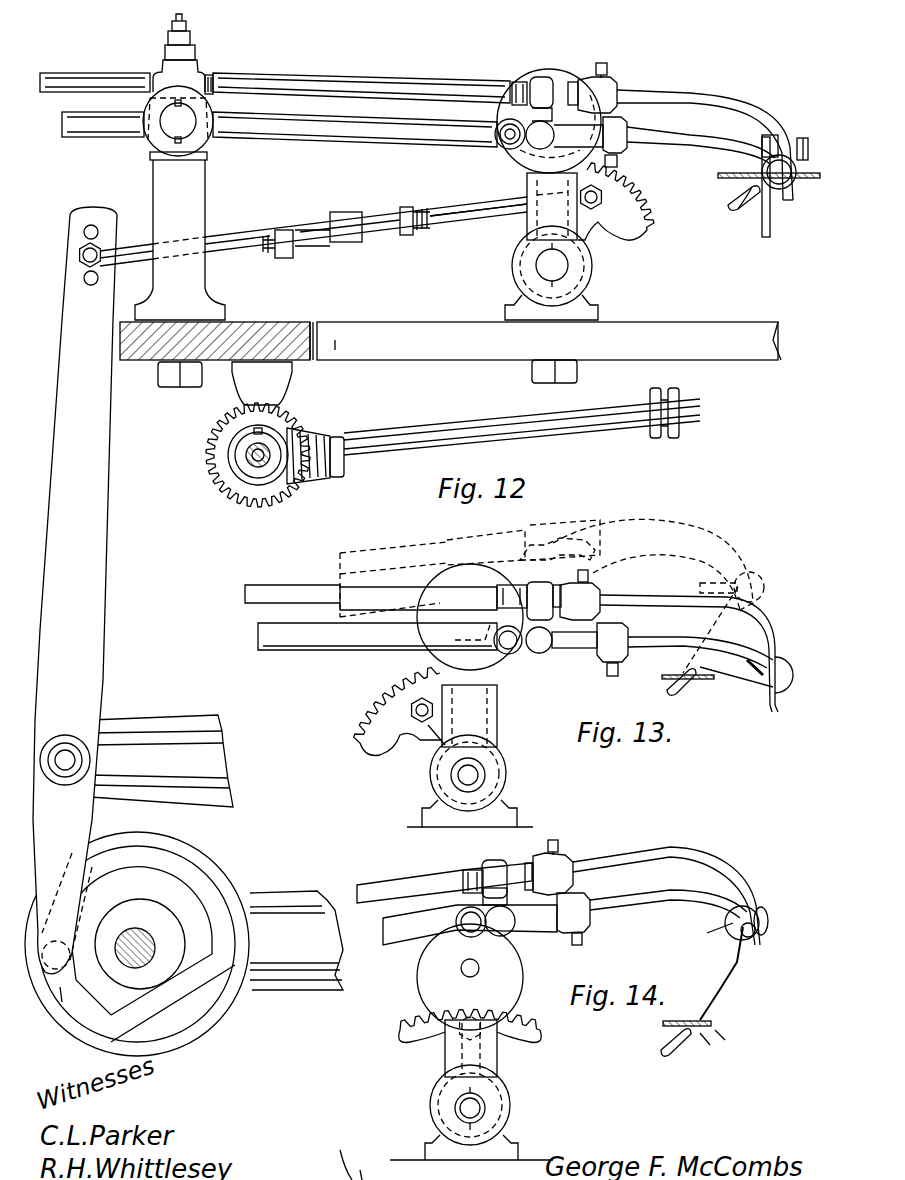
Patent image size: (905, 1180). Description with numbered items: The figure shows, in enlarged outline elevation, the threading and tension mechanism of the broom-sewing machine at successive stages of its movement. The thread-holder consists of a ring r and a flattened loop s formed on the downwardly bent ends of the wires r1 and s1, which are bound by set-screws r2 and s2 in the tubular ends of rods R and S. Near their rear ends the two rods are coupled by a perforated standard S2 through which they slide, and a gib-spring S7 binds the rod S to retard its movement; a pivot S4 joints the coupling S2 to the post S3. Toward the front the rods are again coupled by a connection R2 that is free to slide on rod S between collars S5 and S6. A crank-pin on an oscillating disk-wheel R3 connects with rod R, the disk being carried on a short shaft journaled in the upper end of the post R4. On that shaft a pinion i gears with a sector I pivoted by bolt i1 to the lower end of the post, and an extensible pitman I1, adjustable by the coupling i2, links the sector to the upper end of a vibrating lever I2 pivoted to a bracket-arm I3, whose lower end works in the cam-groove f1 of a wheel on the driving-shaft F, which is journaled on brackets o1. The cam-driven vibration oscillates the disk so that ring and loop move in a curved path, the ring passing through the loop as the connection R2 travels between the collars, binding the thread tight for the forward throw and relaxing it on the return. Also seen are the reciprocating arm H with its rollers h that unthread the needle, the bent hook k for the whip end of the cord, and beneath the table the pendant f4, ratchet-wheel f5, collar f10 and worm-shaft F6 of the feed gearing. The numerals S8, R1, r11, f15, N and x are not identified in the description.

In FIG. 12, the rod S is at (275, 88).
In FIG. 13, the rod S is at (371, 597).
In FIG. 14, the rod S is at (444, 883).
In FIG. 12, the perforated standard S2 is at (179, 76).
In FIG. 12, the post S3 is at (180, 236).
In FIG. 12, the pivot S4 is at (178, 121).
In FIG. 12, the collar S5 is at (518, 80).
In FIG. 12, the collar S6 is at (573, 80).
In FIG. 13, the collar S6 is at (557, 583).
In FIG. 14, the collar S6 is at (529, 861).
In FIG. 12, the gib-spring S7 is at (204, 70).
In FIG. 12, the cap nut S8 is at (203, 44).
In FIG. 12, the wire s1 is at (705, 134).
In FIG. 13, the wire s1 is at (687, 641).
In FIG. 14, the wire s1 is at (666, 888).
In FIG. 12, the set-screw s2 is at (600, 81).
In FIG. 13, the set-screw s2 is at (581, 588).
In FIG. 14, the set-screw s2 is at (553, 865).
In FIG. 12, the flattened loop s is at (798, 200).
In FIG. 13, the flattened loop s is at (779, 715).
In FIG. 14, the flattened loop s is at (766, 921).
In FIG. 12, the rod R is at (279, 129).
In FIG. 13, the rod R is at (377, 636).
In FIG. 14, the rod R is at (470, 925).
In FIG. 12, the pipe coupling R1 is at (541, 92).
In FIG. 13, the pipe coupling R1 is at (512, 596).
In FIG. 14, the pipe coupling R1 is at (485, 879).
In FIG. 12, the coupling R2 is at (564, 128).
In FIG. 13, the coupling R2 is at (561, 617).
In FIG. 14, the coupling R2 is at (499, 908).
In FIG. 12, the oscillating disk-wheel R3 is at (549, 121).
In FIG. 13, the oscillating disk-wheel R3 is at (470, 617).
In FIG. 14, the oscillating disk-wheel R3 is at (470, 977).
In FIG. 12, the post R4 is at (552, 206).
In FIG. 13, the post R4 is at (469, 716).
In FIG. 14, the post R4 is at (485, 1052).
In FIG. 12, the pipe joint ring r11 is at (510, 134).
In FIG. 13, the pipe joint ring r11 is at (508, 640).
In FIG. 14, the pipe joint ring r11 is at (471, 922).
In FIG. 12, the wire r1 is at (701, 139).
In FIG. 13, the wire r1 is at (700, 645).
In FIG. 14, the wire r1 is at (668, 896).
In FIG. 12, the set-screw r2 is at (619, 162).
In FIG. 13, the set-screw r2 is at (620, 670).
In FIG. 14, the set-screw r2 is at (584, 938).
In FIG. 12, the ring r is at (699, 168).
In FIG. 13, the ring r is at (704, 658).
In FIG. 14, the ring r is at (660, 926).
In FIG. 12, the sector I is at (616, 201).
In FIG. 13, the sector I is at (399, 711).
In FIG. 14, the sector I is at (470, 1026).
In FIG. 12, the extensible pitman I1 is at (450, 210).
In FIG. 12, the vibrating lever I2 is at (75, 590).
In FIG. 12, the bracket-arm I3 is at (161, 761).
In FIG. 13, the pinion i is at (468, 773).
In FIG. 12, the bolt i1 is at (552, 266).
In FIG. 14, the bolt i1 is at (470, 1105).
In FIG. 12, the extensible coupling i2 is at (346, 214).
In FIG. 12, the cam-groove f1 is at (65, 999).
In FIG. 12, the pendant f4 is at (262, 383).
In FIG. 12, the ratchet-wheel f5 is at (248, 448).
In FIG. 12, the bound collar f10 is at (256, 462).
In FIG. 12, the bevel pinion f15 is at (300, 423).
In FIG. 12, the driving-shaft F is at (137, 944).
In FIG. 12, the worm-shaft F6 is at (668, 388).
In FIG. 12, the bracket o1 is at (296, 940).
In FIG. 12, the roller h is at (770, 133).
In FIG. 12, the bent hook k is at (805, 136).
In FIG. 12, the reciprocating arm H is at (772, 190).
In FIG. 12, the nozzle N is at (727, 203).
In FIG. 13, the nozzle N is at (670, 692).
In FIG. 14, the nozzle N is at (662, 1053).
In FIG. 12, the hatched bar x is at (769, 184).
In FIG. 13, the hatched bar x is at (700, 683).
In FIG. 14, the hatched bar x is at (700, 1028).